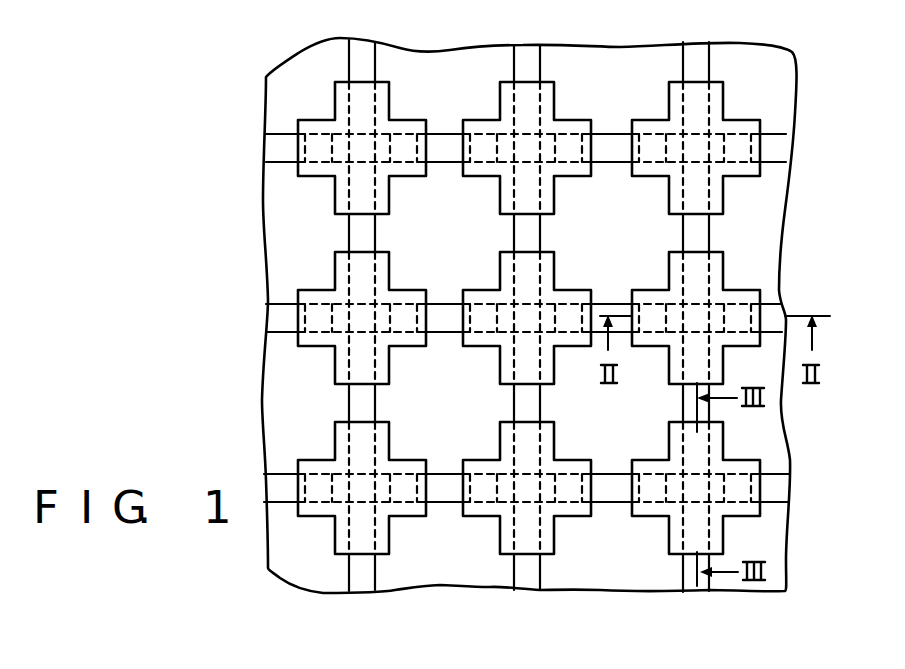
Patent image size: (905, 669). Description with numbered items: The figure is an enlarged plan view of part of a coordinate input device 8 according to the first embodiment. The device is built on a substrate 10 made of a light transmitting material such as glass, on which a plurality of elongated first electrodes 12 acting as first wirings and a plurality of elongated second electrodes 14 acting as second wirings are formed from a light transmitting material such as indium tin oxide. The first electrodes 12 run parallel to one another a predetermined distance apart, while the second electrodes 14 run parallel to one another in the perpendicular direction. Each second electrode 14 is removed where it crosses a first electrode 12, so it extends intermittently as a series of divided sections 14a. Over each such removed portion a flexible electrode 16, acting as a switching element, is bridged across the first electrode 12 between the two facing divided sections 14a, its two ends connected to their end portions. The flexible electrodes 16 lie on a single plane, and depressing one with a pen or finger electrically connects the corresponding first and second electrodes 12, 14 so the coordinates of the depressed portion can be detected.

The coordinate input device 8 is at (792, 402).
The substrate 10 is at (568, 577).
The first electrodes 12 is at (353, 63).
The second electrodes 14 is at (287, 145).
The divided sections 14a is at (445, 143).
The flexible electrode 16 is at (389, 187).